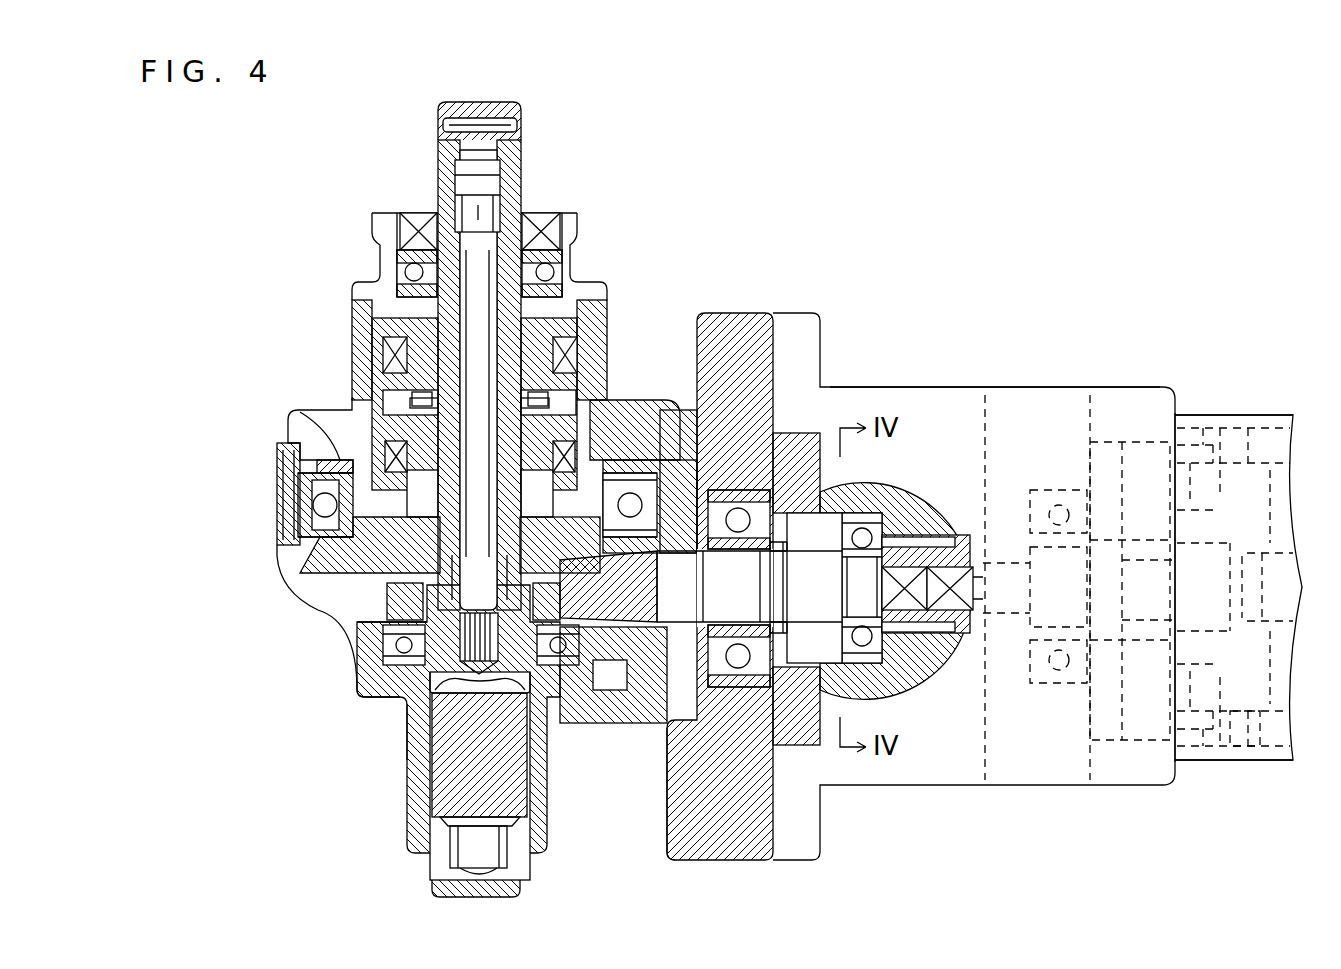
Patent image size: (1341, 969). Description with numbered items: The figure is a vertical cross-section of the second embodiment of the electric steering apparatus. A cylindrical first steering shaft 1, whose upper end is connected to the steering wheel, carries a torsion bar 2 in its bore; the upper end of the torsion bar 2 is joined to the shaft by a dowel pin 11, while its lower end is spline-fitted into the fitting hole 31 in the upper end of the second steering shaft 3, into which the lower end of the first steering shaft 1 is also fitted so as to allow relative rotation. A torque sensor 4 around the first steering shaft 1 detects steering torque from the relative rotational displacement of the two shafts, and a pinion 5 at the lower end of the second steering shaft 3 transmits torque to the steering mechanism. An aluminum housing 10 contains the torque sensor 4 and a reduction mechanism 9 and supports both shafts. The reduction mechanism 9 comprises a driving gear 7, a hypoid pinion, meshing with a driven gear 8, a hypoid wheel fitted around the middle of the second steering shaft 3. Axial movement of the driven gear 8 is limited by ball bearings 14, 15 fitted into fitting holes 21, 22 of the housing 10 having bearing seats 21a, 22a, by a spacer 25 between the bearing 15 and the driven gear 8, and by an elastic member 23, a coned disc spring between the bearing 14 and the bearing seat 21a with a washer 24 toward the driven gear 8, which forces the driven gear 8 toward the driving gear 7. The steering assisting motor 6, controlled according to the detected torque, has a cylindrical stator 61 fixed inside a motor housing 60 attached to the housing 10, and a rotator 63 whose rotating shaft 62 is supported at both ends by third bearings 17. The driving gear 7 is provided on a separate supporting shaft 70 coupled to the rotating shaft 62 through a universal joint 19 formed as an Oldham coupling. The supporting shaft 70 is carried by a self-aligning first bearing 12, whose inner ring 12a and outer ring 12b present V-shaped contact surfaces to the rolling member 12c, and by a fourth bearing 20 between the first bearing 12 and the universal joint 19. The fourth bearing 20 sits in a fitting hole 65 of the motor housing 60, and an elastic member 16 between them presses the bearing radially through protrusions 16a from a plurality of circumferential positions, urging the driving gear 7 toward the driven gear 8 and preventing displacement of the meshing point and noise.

The first steering shaft 1 is at (437, 180).
The torsion bar 2 is at (460, 232).
The second steering shaft 3 is at (400, 690).
The torque sensor 4 is at (381, 409).
The pinion 5 is at (443, 797).
The steering assisting motor 6 is at (1287, 393).
The driving gear 7 is at (620, 680).
The driven gear 8 is at (603, 580).
The reduction mechanism 9 is at (303, 555).
The housing 10 is at (280, 572).
The dowel pin 11 is at (440, 125).
The first bearing 12 is at (730, 460).
The inner ring 12a is at (672, 790).
The outer ring 12b is at (790, 663).
The rolling member 12c is at (715, 760).
The bearing 14 is at (318, 500).
The bearing 15 is at (397, 632).
The elastic member 16 is at (818, 470).
The protrusions 16a is at (888, 500).
The third bearings 17 is at (1065, 480).
The universal joint 19 is at (943, 640).
The fourth bearing 20 is at (823, 720).
The fitting hole 21 is at (302, 530).
The bearing seat 21a is at (360, 420).
The fitting hole 22 is at (377, 666).
The bearing seat 22a is at (363, 688).
The elastic member 23 is at (300, 422).
The washer 24 is at (290, 470).
The spacer 25 is at (372, 590).
The fitting hole 31 is at (595, 410).
The motor housing 60 is at (1222, 412).
The stator 61 is at (1275, 740).
The rotating shaft 62 is at (1100, 660).
The rotator 63 is at (1253, 753).
The fitting hole 65 is at (905, 500).
The supporting shaft 70 is at (692, 565).